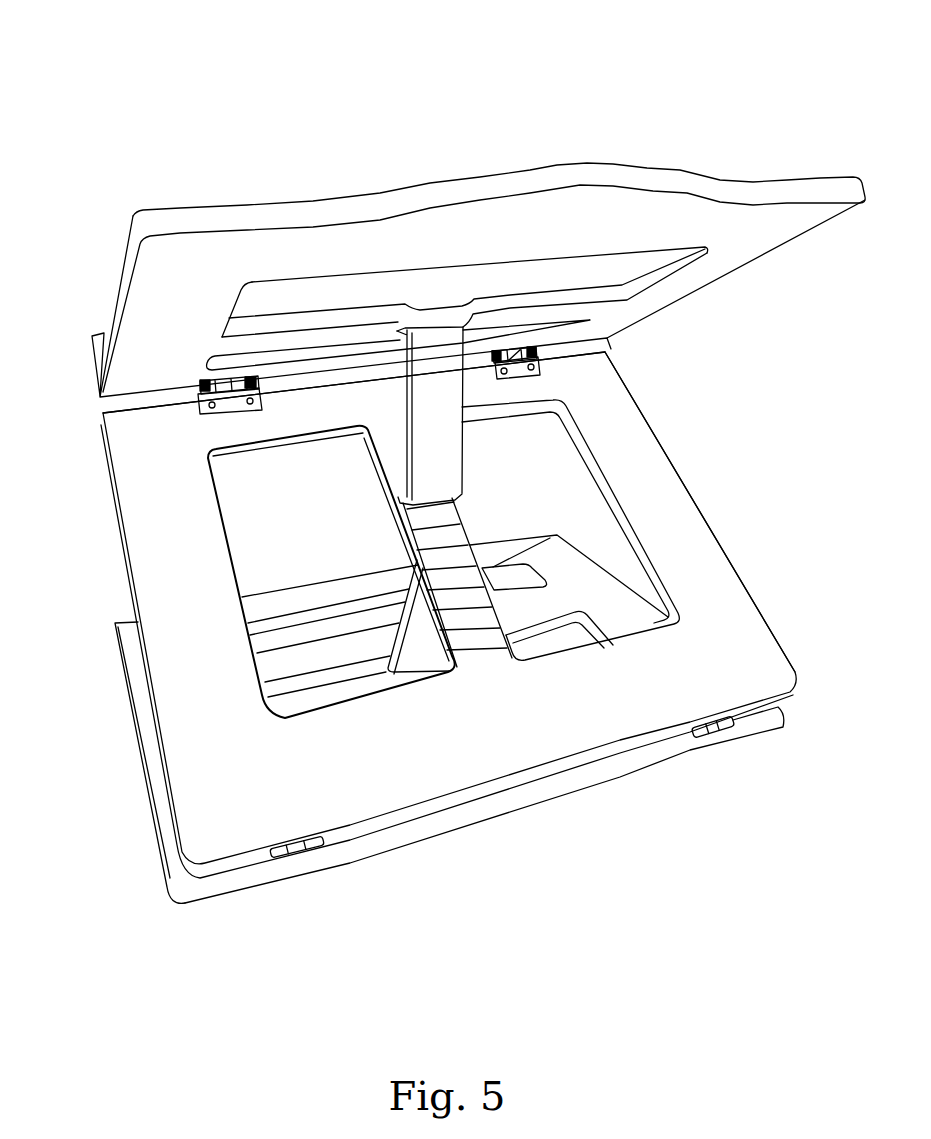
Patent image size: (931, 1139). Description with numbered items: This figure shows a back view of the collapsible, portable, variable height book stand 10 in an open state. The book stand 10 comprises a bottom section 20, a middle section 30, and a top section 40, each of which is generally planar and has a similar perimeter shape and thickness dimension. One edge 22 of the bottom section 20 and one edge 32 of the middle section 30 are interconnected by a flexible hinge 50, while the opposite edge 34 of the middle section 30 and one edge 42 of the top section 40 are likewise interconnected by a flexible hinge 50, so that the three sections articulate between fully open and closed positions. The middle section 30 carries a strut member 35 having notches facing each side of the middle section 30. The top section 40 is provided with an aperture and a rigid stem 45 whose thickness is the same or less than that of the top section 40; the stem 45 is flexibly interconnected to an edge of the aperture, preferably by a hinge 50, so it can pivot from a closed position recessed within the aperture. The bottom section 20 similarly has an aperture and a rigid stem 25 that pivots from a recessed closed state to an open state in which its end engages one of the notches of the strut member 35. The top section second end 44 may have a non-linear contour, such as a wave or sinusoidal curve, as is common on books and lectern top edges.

The book stand 10 is at (204, 72).
The bottom section 20 is at (130, 648).
The edge of the bottom section 22 is at (242, 885).
The rigid stem 25 is at (430, 652).
The middle section 30 is at (132, 497).
The edge of the middle section 32 is at (798, 680).
The opposite edge of the middle section 34 is at (102, 413).
The strut member 35 is at (463, 532).
The top section 40 is at (758, 235).
The edge of the top section 42 is at (117, 385).
The top section second end 44 is at (530, 180).
The rigid stem 45 is at (427, 438).
The flexible hinge 50 is at (233, 412).